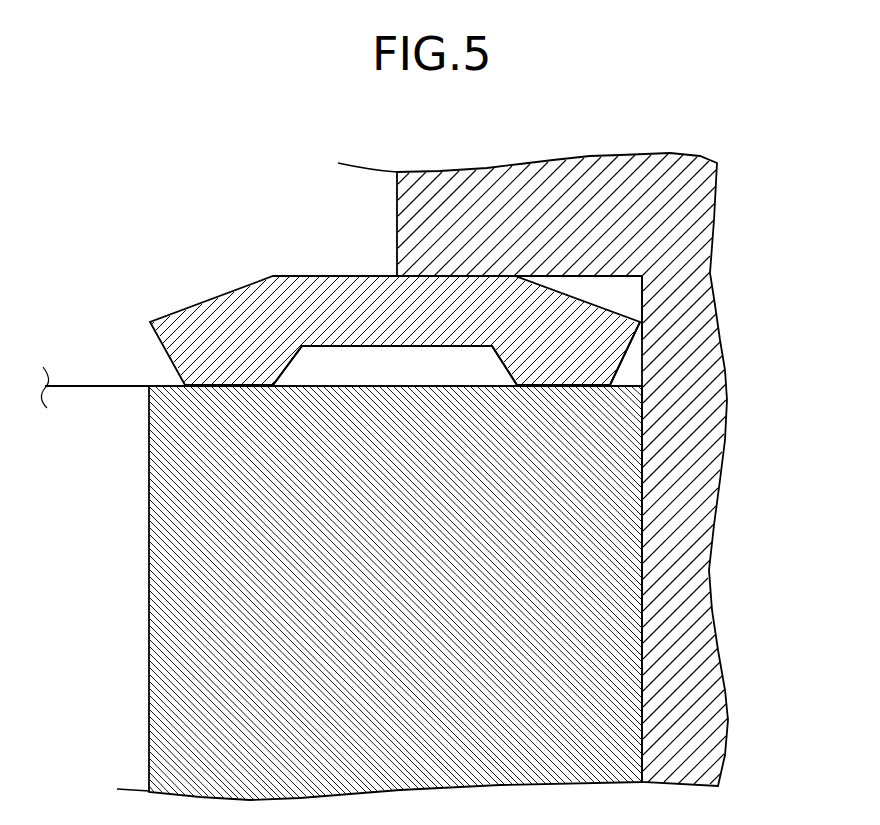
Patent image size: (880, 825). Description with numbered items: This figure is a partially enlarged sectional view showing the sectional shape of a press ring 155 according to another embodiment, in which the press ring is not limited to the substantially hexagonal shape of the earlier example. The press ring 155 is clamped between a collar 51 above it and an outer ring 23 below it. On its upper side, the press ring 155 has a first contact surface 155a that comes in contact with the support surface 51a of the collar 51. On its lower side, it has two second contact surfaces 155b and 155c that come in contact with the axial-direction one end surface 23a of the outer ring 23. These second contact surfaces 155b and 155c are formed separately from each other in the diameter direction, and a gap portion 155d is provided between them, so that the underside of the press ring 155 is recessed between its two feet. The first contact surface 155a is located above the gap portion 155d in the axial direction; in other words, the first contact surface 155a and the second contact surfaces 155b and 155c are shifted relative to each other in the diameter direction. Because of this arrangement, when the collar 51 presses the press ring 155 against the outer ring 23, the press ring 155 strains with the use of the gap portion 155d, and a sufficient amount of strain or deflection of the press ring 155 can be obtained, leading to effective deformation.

The outer ring 23 is at (625, 595).
The axial-direction one end surface 23a is at (205, 387).
The collar 51 is at (410, 193).
The support surface 51a is at (580, 277).
The press ring 155 is at (237, 297).
The first contact surface 155a is at (327, 275).
The second contact surface 155b is at (215, 387).
The second contact surface 155c is at (582, 390).
The gap portion 155d is at (448, 347).